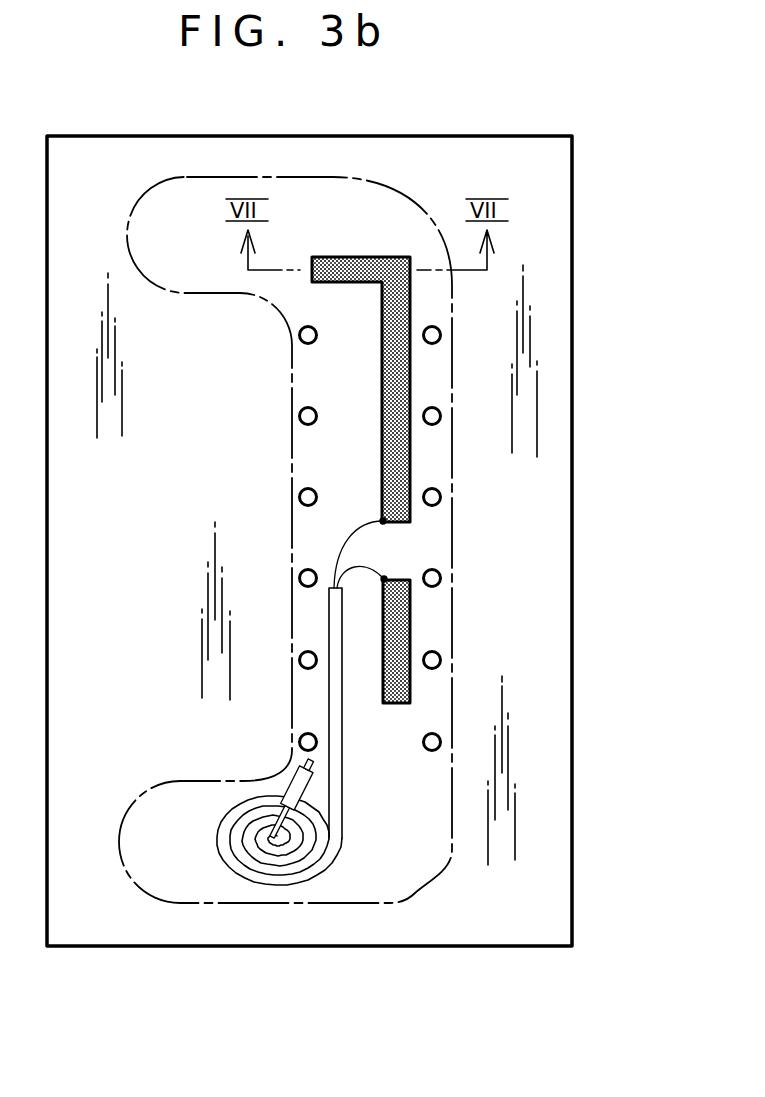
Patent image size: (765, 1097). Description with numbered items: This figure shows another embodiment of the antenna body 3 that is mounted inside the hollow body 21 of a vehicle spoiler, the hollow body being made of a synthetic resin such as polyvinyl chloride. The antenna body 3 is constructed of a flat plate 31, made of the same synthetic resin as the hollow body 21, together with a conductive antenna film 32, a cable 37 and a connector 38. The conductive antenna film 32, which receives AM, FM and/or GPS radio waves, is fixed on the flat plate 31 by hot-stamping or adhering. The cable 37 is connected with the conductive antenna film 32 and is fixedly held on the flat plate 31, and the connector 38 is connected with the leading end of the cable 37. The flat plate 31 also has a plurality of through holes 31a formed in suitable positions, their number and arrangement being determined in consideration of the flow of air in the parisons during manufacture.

The antenna body 3 is at (359, 541).
The hollow body 21 is at (288, 360).
The flat plate 31 is at (548, 841).
The through holes 31a is at (298, 500).
The conductive antenna film 32 is at (408, 310).
The cable 37 is at (332, 692).
The connector 38 is at (295, 785).